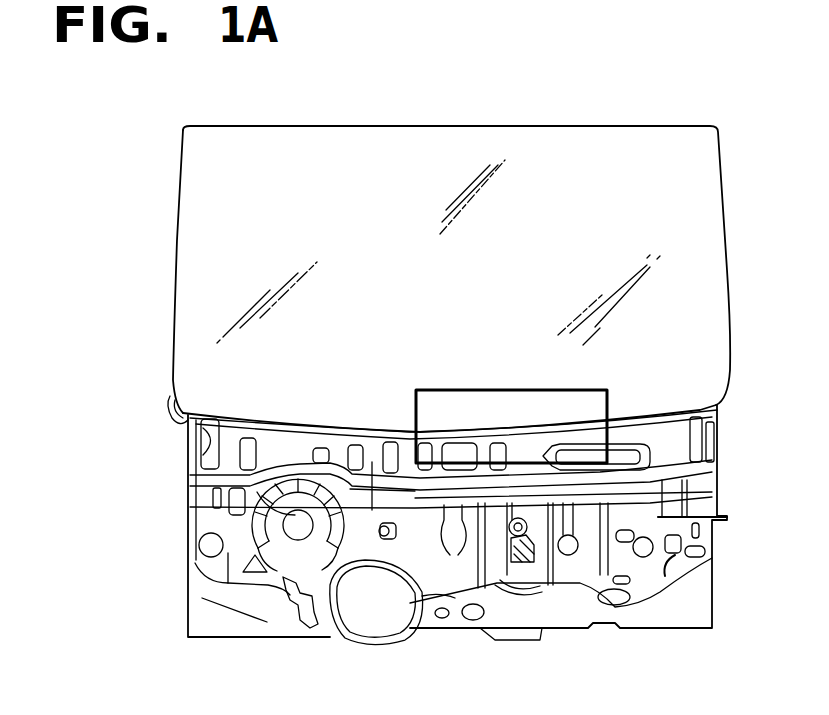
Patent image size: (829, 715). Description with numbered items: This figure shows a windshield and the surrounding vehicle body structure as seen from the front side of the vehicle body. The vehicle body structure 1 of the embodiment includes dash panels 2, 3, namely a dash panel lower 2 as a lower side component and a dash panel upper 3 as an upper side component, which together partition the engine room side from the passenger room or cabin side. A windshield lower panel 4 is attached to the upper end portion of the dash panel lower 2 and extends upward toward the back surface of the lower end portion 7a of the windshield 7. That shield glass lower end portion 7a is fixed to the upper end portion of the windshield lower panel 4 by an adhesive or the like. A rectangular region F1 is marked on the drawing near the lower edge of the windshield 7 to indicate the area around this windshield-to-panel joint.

The vehicle body structure 1 is at (363, 90).
The dash panel lower 2 is at (540, 575).
The dash panel upper 3 is at (298, 478).
The windshield lower panel 4 is at (372, 462).
The windshield 7 is at (335, 162).
The lower end portion of the windshield 7a is at (650, 412).
The region F1 is at (505, 390).